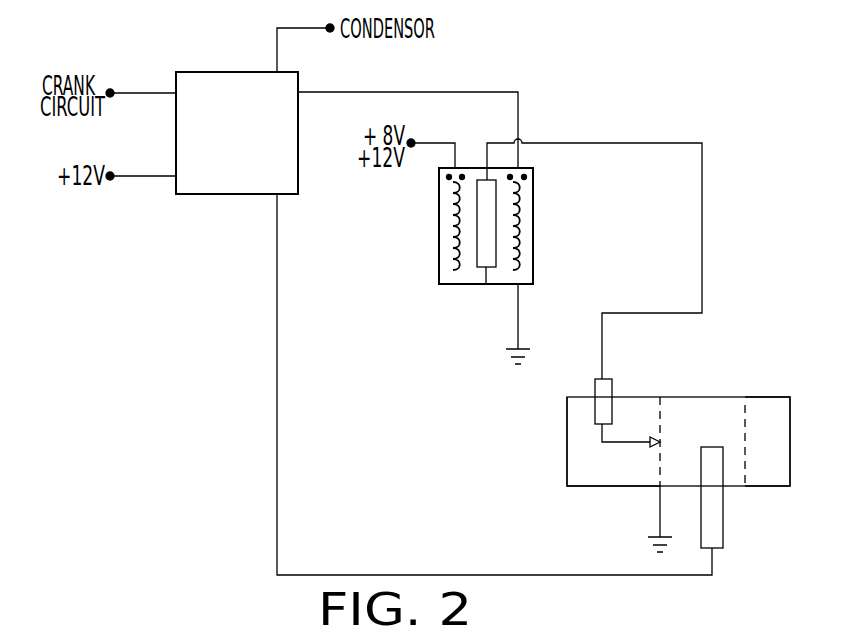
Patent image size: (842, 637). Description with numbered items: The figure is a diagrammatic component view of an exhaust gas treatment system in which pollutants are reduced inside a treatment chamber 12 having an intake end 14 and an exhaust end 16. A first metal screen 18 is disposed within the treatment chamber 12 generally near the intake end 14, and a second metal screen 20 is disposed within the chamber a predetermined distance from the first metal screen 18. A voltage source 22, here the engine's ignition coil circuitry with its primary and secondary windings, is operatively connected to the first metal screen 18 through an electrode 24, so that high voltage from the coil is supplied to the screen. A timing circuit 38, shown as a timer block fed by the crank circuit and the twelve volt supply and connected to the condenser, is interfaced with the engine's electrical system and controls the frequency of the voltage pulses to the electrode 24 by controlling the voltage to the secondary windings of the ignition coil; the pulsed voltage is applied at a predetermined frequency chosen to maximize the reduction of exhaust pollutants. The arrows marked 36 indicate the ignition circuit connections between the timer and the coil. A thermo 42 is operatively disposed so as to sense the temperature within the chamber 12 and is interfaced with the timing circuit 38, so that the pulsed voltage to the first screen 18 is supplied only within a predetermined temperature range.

The treatment chamber 12 is at (700, 397).
The intake end 14 is at (567, 444).
The exhaust end 16 is at (790, 443).
The first metal screen 18 is at (661, 429).
The second metal screen 20 is at (747, 467).
The voltage source 22 is at (534, 200).
The electrode 24 is at (605, 392).
The ignition circuit 36 is at (127, 200).
The timing circuit 38 is at (296, 80).
The thermo 42 is at (723, 527).